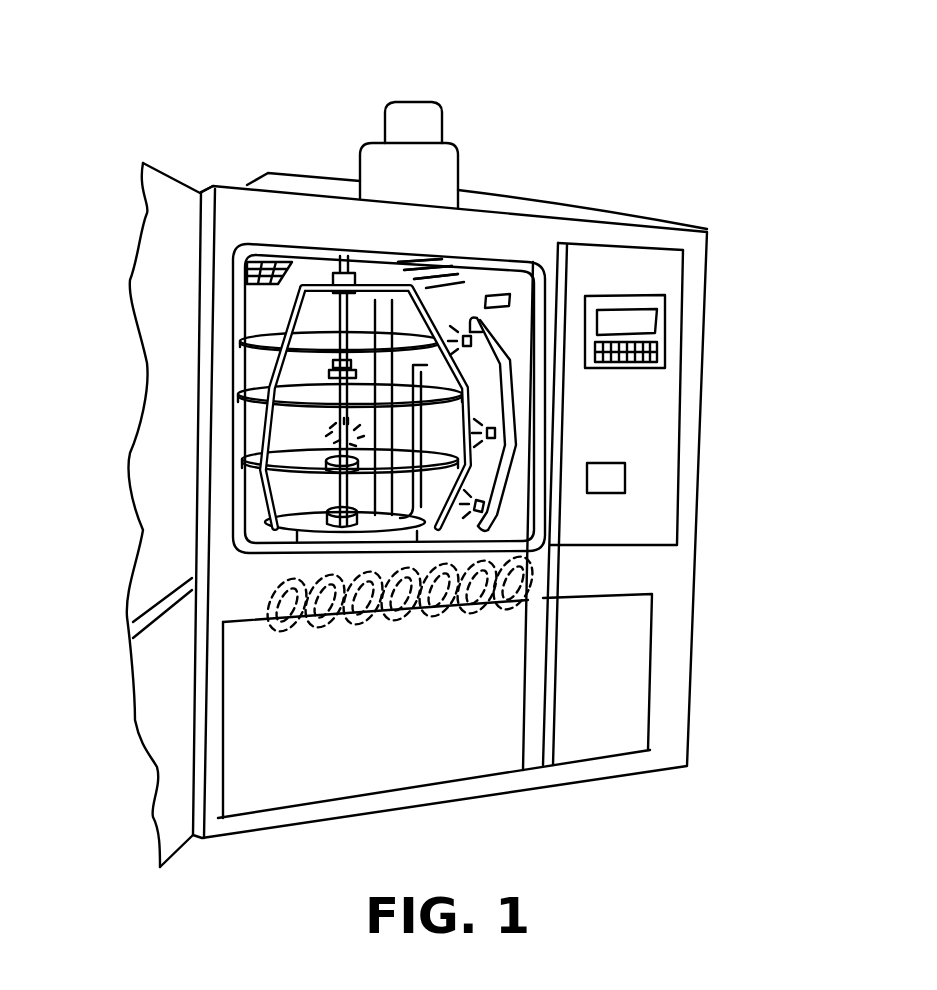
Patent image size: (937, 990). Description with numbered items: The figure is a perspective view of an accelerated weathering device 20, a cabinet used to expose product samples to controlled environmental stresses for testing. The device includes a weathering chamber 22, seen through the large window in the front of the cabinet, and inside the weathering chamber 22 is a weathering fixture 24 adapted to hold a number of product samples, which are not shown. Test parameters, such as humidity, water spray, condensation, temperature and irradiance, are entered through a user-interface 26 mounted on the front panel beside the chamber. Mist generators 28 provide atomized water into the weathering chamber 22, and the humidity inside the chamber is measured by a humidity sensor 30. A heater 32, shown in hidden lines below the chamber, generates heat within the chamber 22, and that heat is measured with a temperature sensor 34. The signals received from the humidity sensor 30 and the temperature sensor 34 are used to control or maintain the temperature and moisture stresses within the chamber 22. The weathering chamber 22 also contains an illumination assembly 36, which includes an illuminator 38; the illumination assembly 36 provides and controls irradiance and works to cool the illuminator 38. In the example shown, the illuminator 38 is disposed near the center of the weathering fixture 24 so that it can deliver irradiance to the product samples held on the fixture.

The accelerated weathering device 20 is at (286, 103).
The weathering chamber 22 is at (520, 433).
The weathering fixture 24 is at (262, 342).
The user-interface 26 is at (652, 294).
The mist generators 28 is at (500, 345).
The humidity sensor 30 is at (502, 293).
The heater 32 is at (540, 590).
The temperature sensor 34 is at (425, 266).
The illumination assembly 36 is at (325, 462).
The illuminator 38 is at (323, 424).